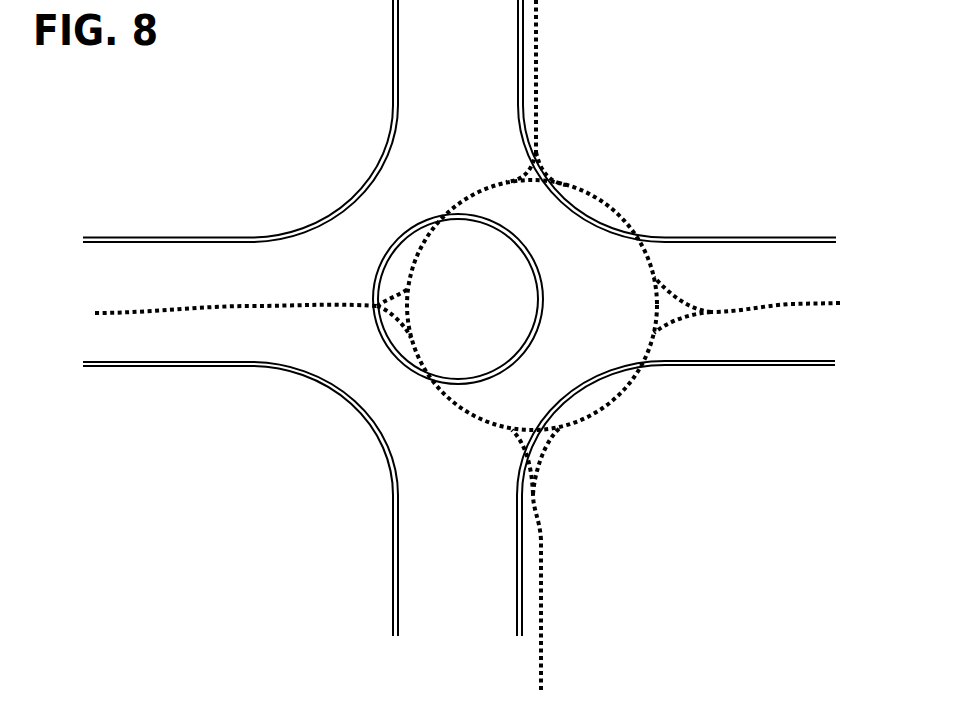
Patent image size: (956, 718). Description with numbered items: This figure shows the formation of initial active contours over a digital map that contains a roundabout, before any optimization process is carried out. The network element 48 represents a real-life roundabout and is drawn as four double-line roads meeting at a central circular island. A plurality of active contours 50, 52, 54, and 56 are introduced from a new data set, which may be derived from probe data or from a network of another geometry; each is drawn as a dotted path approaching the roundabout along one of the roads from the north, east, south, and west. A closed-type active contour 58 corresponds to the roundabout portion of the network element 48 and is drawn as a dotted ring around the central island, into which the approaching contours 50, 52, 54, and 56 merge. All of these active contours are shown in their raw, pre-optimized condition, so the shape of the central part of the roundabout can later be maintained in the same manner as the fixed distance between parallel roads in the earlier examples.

The network element 48 is at (393, 27).
The active contour 50 is at (536, 72).
The active contour 52 is at (771, 300).
The active contour 54 is at (541, 616).
The active contour 56 is at (138, 310).
The closed-type active contour 58 is at (453, 404).